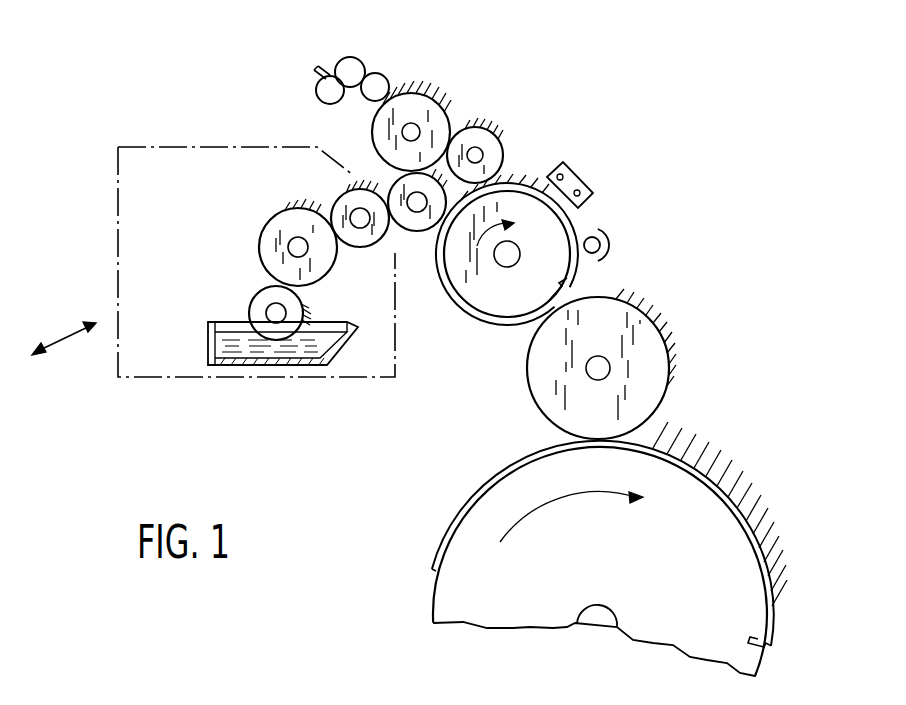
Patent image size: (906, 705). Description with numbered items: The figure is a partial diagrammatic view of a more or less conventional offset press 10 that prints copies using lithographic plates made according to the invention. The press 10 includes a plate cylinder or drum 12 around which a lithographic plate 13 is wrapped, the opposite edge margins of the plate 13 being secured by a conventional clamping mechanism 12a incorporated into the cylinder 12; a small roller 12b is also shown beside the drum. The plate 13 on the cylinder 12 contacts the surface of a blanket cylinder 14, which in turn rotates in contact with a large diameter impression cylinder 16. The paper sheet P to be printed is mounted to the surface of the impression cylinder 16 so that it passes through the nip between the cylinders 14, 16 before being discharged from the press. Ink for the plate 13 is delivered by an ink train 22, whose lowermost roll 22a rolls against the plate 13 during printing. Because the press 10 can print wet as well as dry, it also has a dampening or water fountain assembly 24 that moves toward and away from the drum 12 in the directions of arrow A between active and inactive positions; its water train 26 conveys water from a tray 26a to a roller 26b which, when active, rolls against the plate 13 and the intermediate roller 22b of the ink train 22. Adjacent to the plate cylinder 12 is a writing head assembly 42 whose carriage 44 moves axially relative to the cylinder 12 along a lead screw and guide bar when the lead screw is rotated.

The offset press 10 is at (458, 63).
The plate cylinder 12 is at (552, 240).
The clamping mechanism 12a is at (552, 287).
The roller 12b is at (679, 263).
The lithographic plate 13 is at (457, 305).
The blanket cylinder 14 is at (667, 353).
The impression cylinder 16 is at (468, 590).
The ink train 22 is at (423, 64).
The lowermost roll 22a is at (578, 125).
The intermediate roller 22b is at (518, 91).
The dampening assembly 24 is at (118, 243).
The water train 26 is at (227, 273).
The tray 26a is at (207, 337).
The roller 26b is at (397, 180).
The writing head assembly 42 is at (583, 148).
The carriage 44 is at (580, 175).
The paper sheet P is at (757, 538).
The arrow A is at (62, 334).